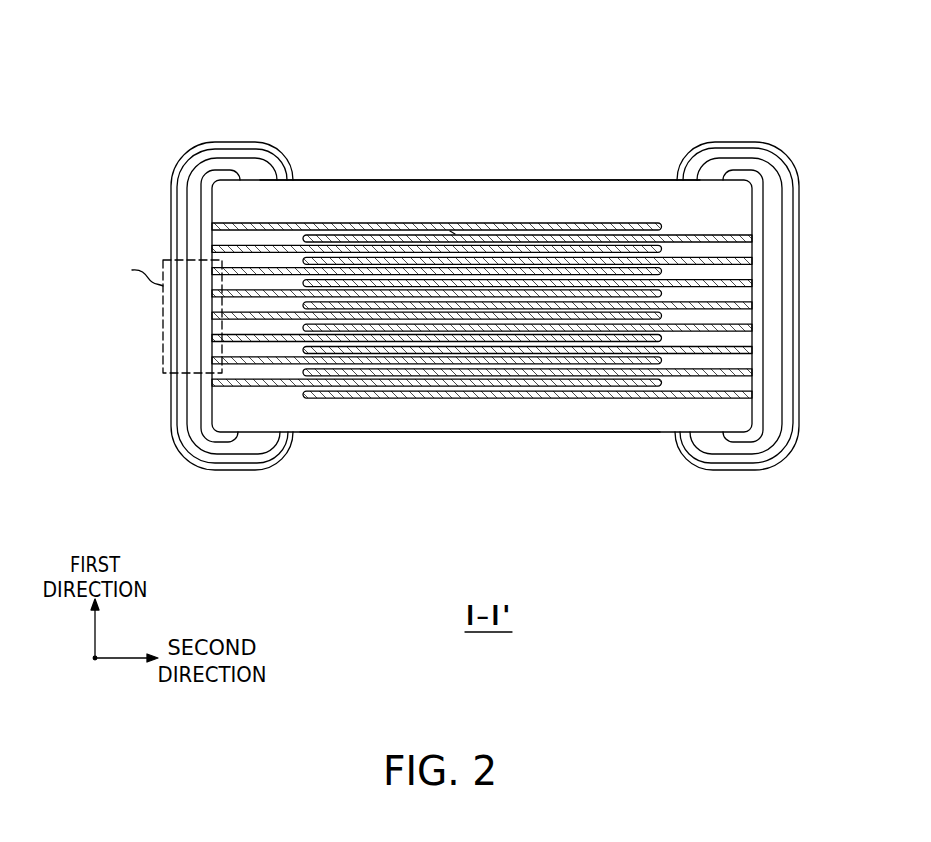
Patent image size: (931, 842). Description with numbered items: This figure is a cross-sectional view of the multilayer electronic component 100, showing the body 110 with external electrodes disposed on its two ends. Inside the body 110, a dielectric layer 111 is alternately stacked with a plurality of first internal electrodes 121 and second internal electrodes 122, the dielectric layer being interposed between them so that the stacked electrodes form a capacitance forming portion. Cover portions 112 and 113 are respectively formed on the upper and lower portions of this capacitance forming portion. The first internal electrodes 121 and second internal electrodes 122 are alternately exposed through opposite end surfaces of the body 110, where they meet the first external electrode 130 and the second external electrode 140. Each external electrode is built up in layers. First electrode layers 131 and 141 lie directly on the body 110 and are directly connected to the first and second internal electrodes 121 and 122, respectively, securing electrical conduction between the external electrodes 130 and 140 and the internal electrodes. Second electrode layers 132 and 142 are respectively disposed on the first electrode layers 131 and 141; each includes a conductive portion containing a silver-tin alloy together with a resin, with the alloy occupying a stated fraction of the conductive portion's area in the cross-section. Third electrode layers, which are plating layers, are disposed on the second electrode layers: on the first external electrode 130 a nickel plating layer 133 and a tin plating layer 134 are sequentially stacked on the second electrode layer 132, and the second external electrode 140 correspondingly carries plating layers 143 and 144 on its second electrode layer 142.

The multilayer electronic component 100 is at (422, 77).
The body 110 is at (480, 433).
The dielectric layer 111 is at (455, 228).
The cover portion 112 is at (593, 197).
The cover portion 113 is at (585, 418).
The first internal electrode 121 is at (408, 227).
The second internal electrode 122 is at (497, 234).
The first external electrode 130 is at (234, 367).
The first electrode layer 131 is at (206, 410).
The second electrode layer 132 is at (220, 450).
The nickel plating layer 133 is at (252, 458).
The tin plating layer 134 is at (155, 543).
The second external electrode 140 is at (728, 367).
The first electrode layer 141 is at (755, 410).
The second electrode layer 142 is at (748, 448).
The nickel plating layer 143 is at (718, 460).
The tin plating layer 144 is at (800, 543).